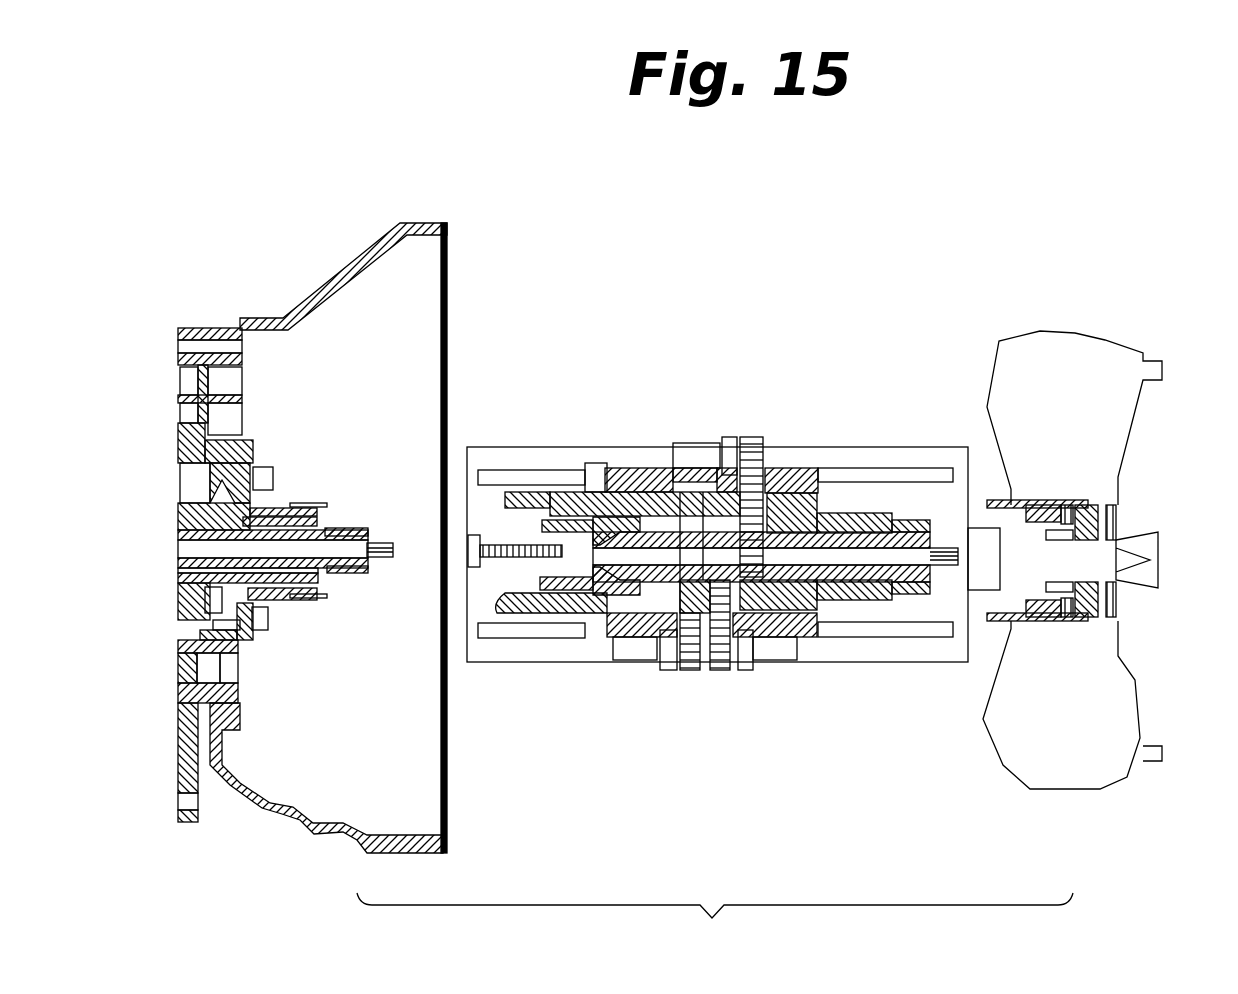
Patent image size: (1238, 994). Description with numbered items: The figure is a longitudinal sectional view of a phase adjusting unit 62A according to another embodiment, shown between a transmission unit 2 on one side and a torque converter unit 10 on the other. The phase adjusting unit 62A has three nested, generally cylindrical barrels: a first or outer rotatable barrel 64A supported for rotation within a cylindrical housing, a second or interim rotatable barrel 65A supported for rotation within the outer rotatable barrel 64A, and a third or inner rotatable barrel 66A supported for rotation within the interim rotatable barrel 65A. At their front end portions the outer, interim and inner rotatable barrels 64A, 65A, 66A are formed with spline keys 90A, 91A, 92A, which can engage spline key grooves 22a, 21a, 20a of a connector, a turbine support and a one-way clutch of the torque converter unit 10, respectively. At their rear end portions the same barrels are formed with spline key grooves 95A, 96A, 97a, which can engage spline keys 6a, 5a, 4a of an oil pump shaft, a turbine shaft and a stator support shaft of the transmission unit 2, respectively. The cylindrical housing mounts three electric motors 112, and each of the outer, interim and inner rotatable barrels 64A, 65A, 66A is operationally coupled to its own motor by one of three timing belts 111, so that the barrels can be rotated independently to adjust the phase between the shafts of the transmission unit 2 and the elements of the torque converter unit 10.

The transmission unit 2 is at (481, 271).
The spline key of stator support shaft 4a is at (390, 540).
The spline key of turbine shaft 5a is at (349, 527).
The spline key of oil pump shaft 6a is at (300, 500).
The torque converter unit 10 is at (1075, 333).
The spline key groove of one-way clutch 20a is at (1118, 556).
The spline key groove of turbine support 21a is at (1077, 540).
The spline key groove of connector 22a is at (1032, 518).
The phase adjusting unit 62A is at (903, 309).
The outer rotatable barrel 64A is at (575, 490).
The interim rotatable barrel 65A is at (632, 527).
The inner rotatable barrel 66A is at (833, 543).
The spline key 90A is at (870, 600).
The spline key 91A is at (900, 577).
The spline key 92A is at (944, 547).
The spline key groove 95A is at (497, 583).
The spline key groove 96A is at (573, 573).
The spline key groove 97a is at (603, 560).
The timing belt 111 is at (755, 442).
The electric motor 112 is at (696, 447).